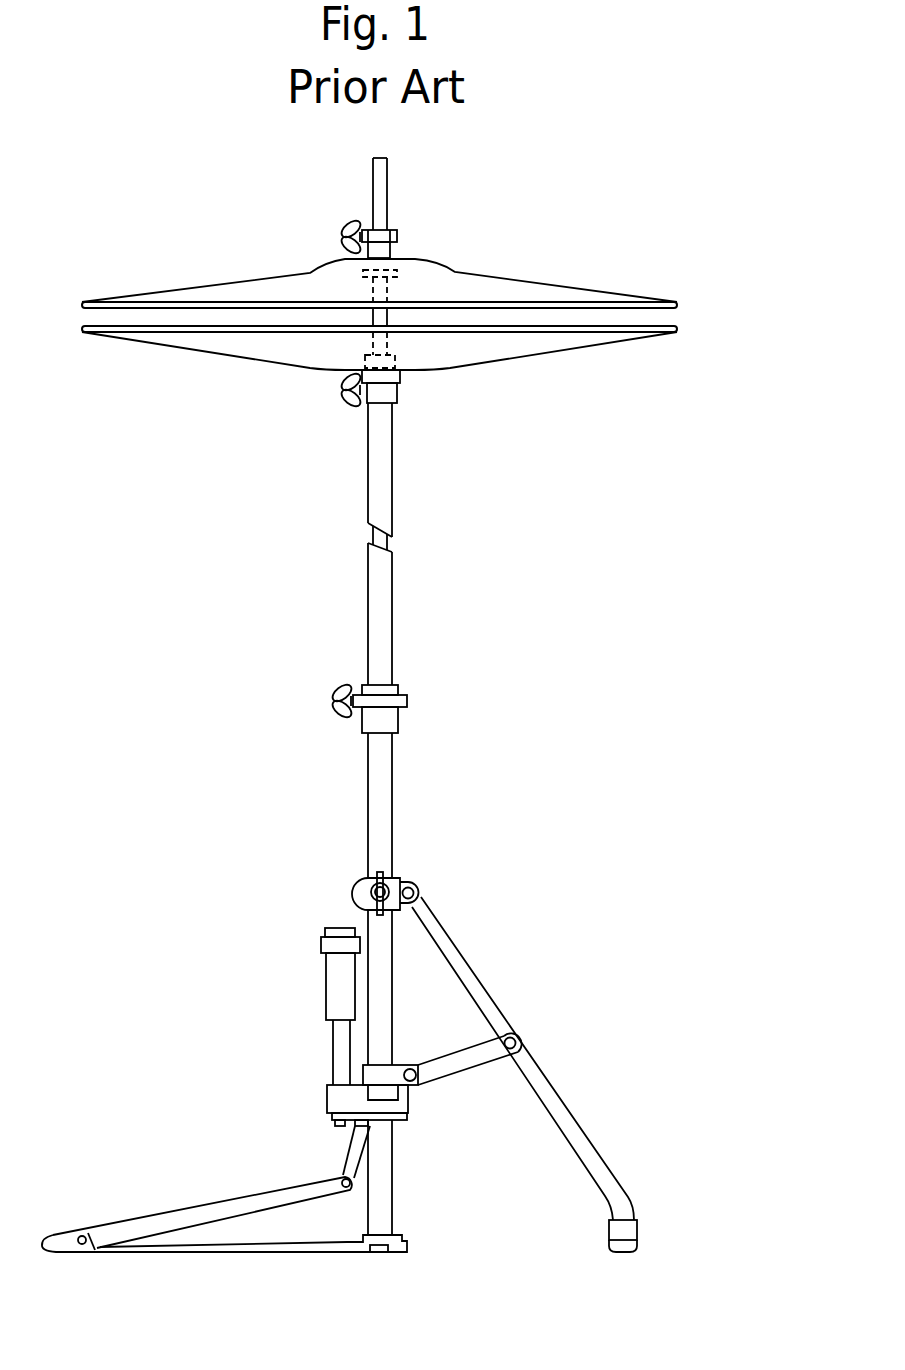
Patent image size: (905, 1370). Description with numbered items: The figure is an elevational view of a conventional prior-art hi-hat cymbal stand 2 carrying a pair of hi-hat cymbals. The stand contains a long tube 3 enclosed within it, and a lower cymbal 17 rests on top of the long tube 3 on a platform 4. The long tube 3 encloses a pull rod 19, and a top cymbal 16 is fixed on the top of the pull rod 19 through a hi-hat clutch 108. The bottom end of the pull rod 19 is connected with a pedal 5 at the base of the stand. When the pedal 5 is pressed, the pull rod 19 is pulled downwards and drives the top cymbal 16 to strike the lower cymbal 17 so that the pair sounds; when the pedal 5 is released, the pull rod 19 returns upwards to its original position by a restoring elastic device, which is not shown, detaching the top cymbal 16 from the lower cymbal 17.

The hi-hat cymbal stand 2 is at (232, 741).
The long tube 3 is at (392, 632).
The platform 4 is at (424, 399).
The pedal 5 is at (207, 1204).
The top cymbal 16 is at (571, 289).
The lower cymbal 17 is at (571, 348).
The pull rod 19 is at (388, 543).
The hi-hat clutch 108 is at (421, 234).